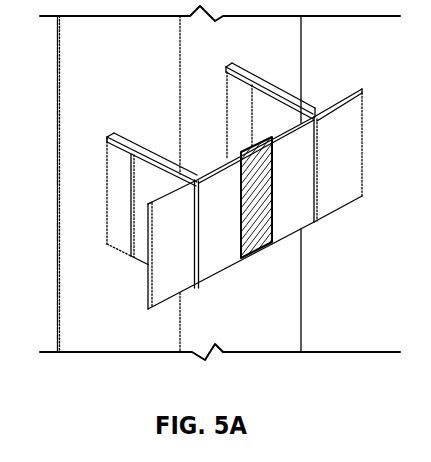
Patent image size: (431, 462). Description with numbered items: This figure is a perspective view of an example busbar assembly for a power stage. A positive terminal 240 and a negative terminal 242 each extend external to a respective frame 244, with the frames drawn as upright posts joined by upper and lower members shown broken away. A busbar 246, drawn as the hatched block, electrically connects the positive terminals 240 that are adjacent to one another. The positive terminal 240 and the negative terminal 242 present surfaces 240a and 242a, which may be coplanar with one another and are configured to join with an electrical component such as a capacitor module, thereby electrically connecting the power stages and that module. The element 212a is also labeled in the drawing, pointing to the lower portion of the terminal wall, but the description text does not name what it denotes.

The wall section 212a is at (167, 286).
The positive terminal 240 is at (158, 151).
The surface 240a is at (218, 257).
The negative terminal 242 is at (287, 91).
The surface 242a is at (340, 200).
The frame 244 is at (289, 54).
The busbar 246 is at (252, 240).